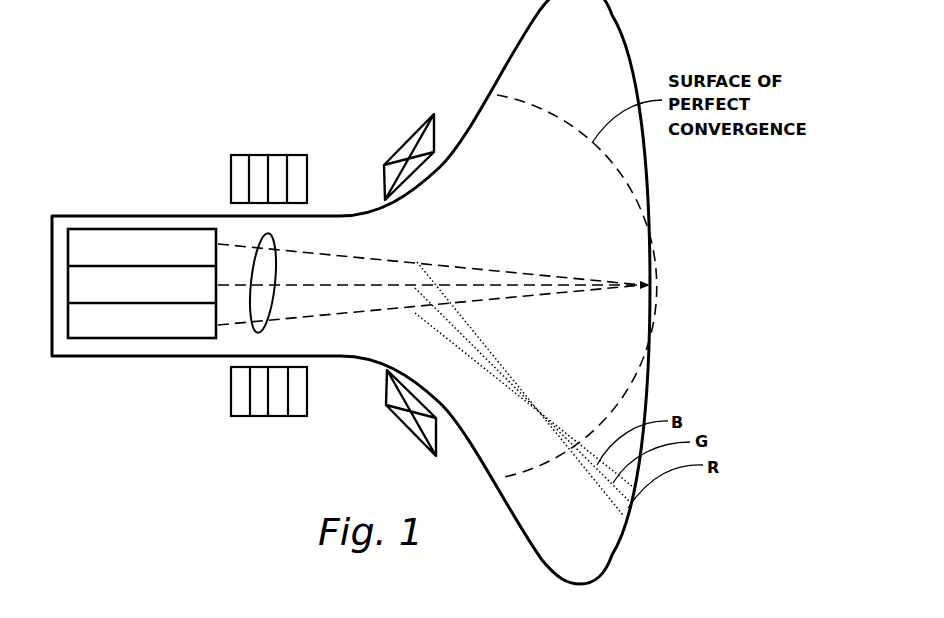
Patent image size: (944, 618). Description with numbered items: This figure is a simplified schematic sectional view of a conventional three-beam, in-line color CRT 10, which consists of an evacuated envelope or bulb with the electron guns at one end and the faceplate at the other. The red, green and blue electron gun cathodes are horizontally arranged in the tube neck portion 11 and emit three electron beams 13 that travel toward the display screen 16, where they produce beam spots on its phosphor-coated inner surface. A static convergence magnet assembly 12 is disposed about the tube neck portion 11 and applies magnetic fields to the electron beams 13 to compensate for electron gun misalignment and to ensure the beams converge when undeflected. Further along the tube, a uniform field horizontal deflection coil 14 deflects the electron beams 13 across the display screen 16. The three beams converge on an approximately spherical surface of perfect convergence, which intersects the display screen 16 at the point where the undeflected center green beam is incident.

The CRT 10 is at (490, 100).
The tube neck portion 11 is at (139, 216).
The static convergence magnet assembly 12 is at (255, 155).
The electron beams 13 is at (257, 333).
The horizontal deflection coil 14 is at (414, 132).
The display screen 16 is at (650, 255).